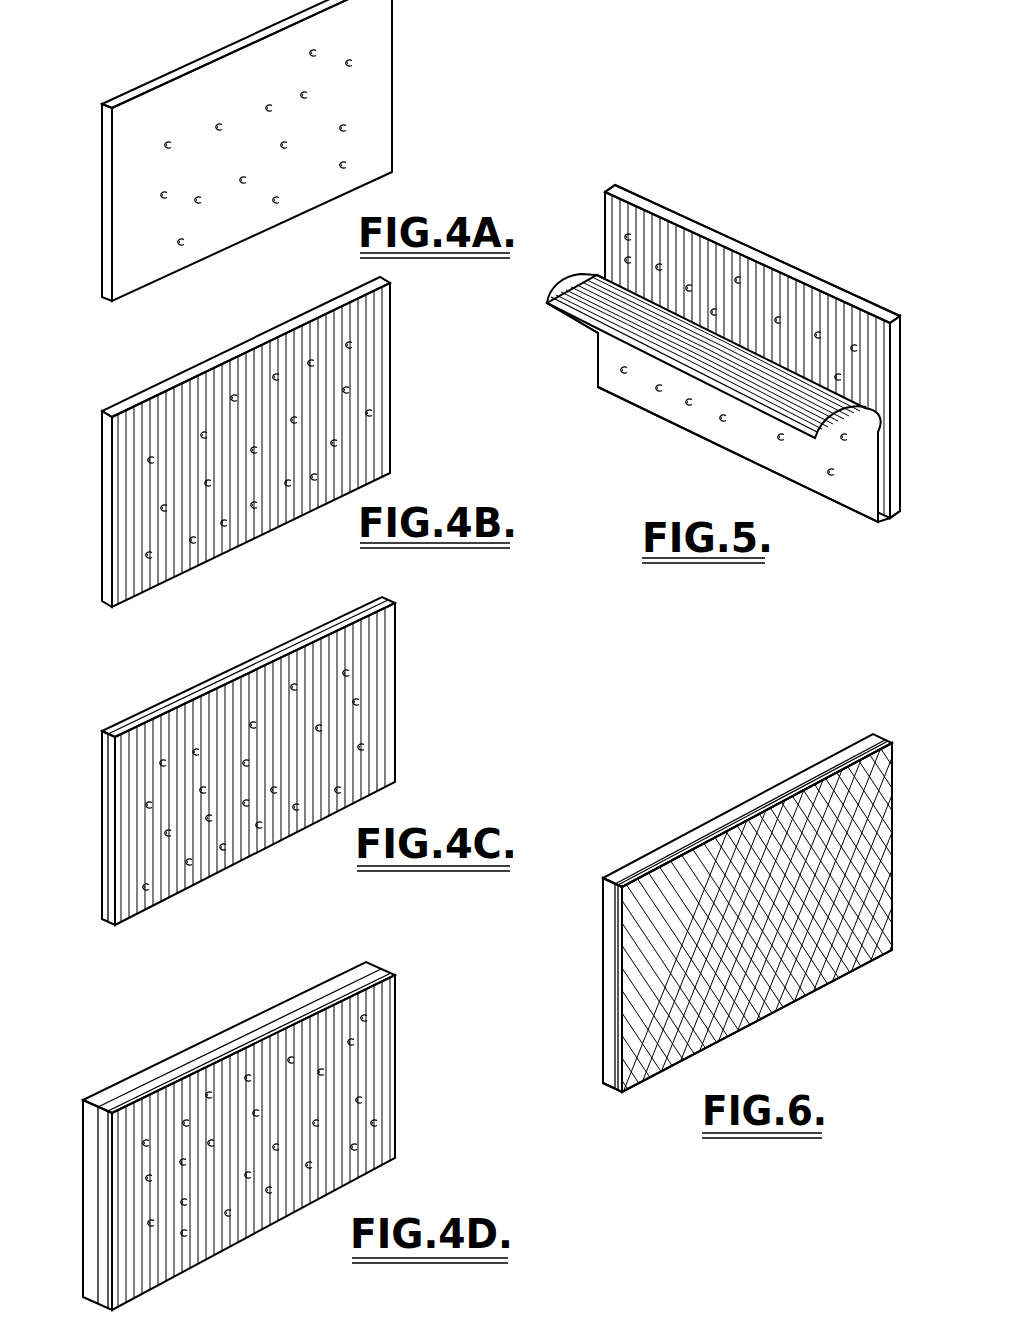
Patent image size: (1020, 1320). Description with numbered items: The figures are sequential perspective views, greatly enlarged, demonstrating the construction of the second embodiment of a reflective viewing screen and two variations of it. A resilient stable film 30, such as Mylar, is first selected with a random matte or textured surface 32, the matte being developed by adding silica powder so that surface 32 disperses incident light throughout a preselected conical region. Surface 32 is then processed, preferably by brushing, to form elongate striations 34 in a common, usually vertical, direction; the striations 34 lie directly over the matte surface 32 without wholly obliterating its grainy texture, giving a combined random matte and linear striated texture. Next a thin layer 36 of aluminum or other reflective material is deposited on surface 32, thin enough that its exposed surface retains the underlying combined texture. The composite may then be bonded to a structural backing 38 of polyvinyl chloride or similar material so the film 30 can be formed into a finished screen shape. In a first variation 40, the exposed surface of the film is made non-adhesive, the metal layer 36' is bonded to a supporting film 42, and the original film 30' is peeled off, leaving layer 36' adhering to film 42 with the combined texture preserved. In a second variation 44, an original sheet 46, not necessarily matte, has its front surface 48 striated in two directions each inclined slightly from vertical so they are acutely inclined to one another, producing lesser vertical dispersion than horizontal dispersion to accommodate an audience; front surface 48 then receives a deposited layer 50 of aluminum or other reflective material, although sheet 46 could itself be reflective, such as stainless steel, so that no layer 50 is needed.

In FIG. 4A, the resilient stable film 30 is at (224, 150).
In FIG. 4B, the resilient stable film 30 is at (221, 442).
In FIG. 4C, the resilient stable film 30 is at (225, 761).
In FIG. 4D, the resilient stable film 30 is at (207, 1136).
In FIG. 4A, the matte surface 32 is at (382, 151).
In FIG. 4B, the matte surface 32 is at (375, 450).
In FIG. 4C, the matte surface 32 is at (388, 740).
In FIG. 4A, the striations 34 is at (346, 126).
In FIG. 4B, the striations 34 is at (366, 412).
In FIG. 4C, the striations 34 is at (253, 780).
In FIG. 4D, the striations 34 is at (260, 1125).
In FIG. 4C, the thin layer of reflective material 36 is at (221, 765).
In FIG. 4D, the thin layer of reflective material 36 is at (216, 1142).
In FIG. 4D, the structural backing 38 is at (88, 1120).
In FIG. 5, the original film 30' is at (700, 398).
In FIG. 5, the metal layer 36' is at (752, 248).
In FIG. 5, the first variation 40 is at (771, 242).
In FIG. 5, the supporting film 42 is at (821, 285).
In FIG. 6, the second variation 44 is at (727, 795).
In FIG. 6, the original sheet 46 is at (608, 925).
In FIG. 6, the front surface 48 is at (618, 1003).
In FIG. 6, the deposited layer of reflective material 50 is at (828, 967).